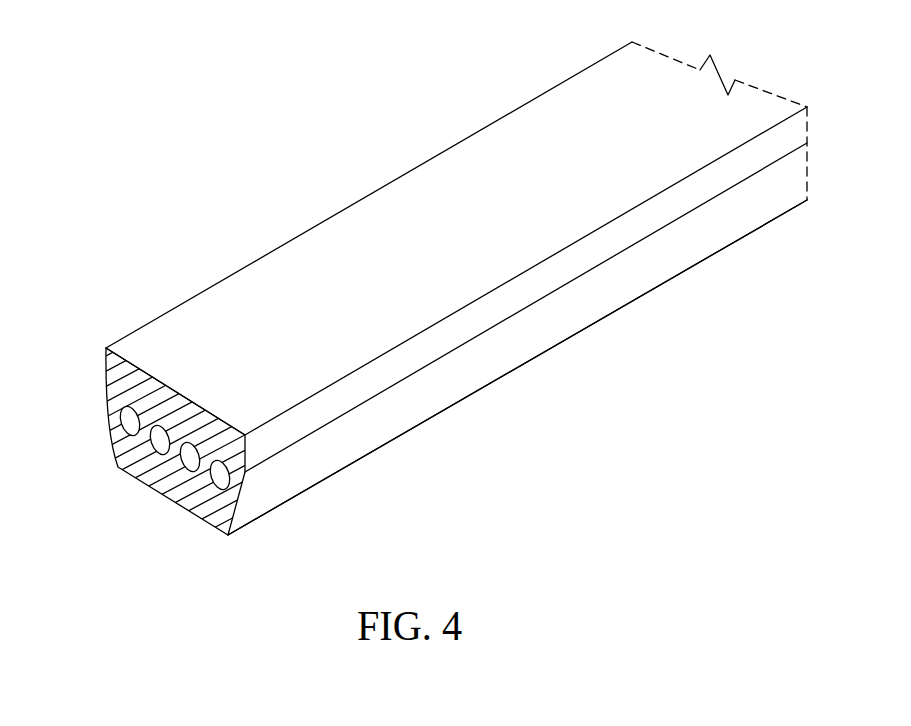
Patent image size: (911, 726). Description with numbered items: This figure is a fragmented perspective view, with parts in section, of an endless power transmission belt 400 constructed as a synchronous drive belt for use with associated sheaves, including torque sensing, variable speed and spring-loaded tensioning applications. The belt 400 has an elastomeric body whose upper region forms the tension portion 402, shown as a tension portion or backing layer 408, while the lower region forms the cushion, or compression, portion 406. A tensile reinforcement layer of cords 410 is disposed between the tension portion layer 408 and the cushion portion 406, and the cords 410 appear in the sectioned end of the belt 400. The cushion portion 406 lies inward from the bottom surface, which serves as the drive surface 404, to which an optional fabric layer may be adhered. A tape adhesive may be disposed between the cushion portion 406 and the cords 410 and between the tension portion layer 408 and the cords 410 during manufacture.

The endless power transmission belt 400 is at (403, 371).
The tension portion 402 is at (455, 190).
The drive surface 404 is at (693, 267).
The cushion portion 406 is at (263, 492).
The tension portion layer 408 is at (105, 382).
The cords 410 is at (135, 420).